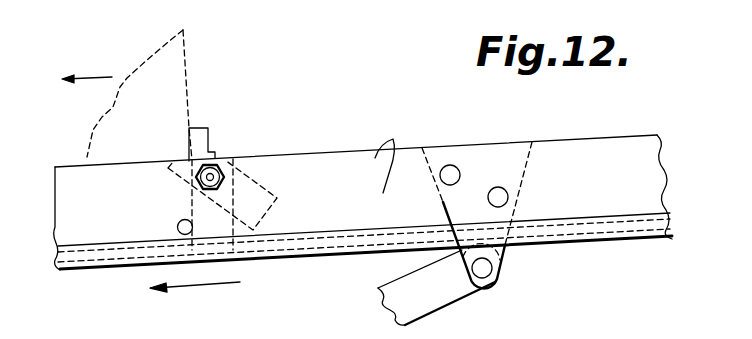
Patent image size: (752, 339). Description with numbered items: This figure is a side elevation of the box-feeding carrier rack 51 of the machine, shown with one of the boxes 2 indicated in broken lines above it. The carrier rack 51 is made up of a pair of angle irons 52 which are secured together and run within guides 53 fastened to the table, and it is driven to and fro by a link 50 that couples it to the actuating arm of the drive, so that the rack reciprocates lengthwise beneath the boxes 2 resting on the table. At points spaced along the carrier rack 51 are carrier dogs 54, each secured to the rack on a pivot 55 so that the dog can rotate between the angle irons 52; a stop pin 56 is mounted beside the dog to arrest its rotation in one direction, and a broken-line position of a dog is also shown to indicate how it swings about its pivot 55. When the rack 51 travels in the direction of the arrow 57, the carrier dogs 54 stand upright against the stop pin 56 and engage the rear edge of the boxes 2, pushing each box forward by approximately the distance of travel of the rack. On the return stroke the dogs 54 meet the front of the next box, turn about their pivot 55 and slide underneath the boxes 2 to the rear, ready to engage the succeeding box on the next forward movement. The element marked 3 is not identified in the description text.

The box 2 is at (185, 63).
The bracket 3 is at (211, 131).
The link 50 is at (457, 297).
The carrier rack 51 is at (610, 222).
The angle iron 52 is at (375, 243).
The guide 53 is at (327, 254).
The carrier dog 54 is at (192, 137).
The pivot 55 is at (195, 185).
The stop pin 56 is at (177, 227).
The arrow 57 is at (196, 286).